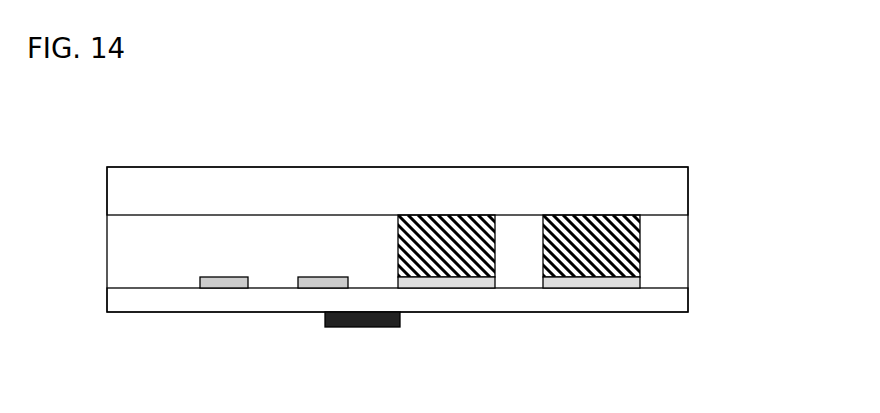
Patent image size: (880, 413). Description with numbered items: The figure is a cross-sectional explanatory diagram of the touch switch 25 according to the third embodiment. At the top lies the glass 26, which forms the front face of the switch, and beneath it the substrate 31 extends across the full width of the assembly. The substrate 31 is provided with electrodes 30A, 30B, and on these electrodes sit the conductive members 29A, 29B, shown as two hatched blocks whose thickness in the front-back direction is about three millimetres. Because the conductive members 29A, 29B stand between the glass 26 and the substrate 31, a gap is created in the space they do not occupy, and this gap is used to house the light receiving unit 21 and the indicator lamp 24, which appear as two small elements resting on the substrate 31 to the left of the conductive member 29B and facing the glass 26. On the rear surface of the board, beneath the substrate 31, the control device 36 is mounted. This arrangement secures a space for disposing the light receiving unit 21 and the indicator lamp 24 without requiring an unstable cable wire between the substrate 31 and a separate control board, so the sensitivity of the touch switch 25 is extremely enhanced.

The touch switch 25 is at (647, 144).
The glass 26 is at (107, 193).
The substrate 31 is at (688, 303).
The light receiving unit 21 is at (196, 283).
The indicator lamp 24 is at (292, 283).
The conductive member 29B is at (396, 255).
The conductive member 29A is at (640, 258).
The electrode 30B is at (447, 288).
The electrode 30A is at (592, 288).
The control device 36 is at (362, 327).